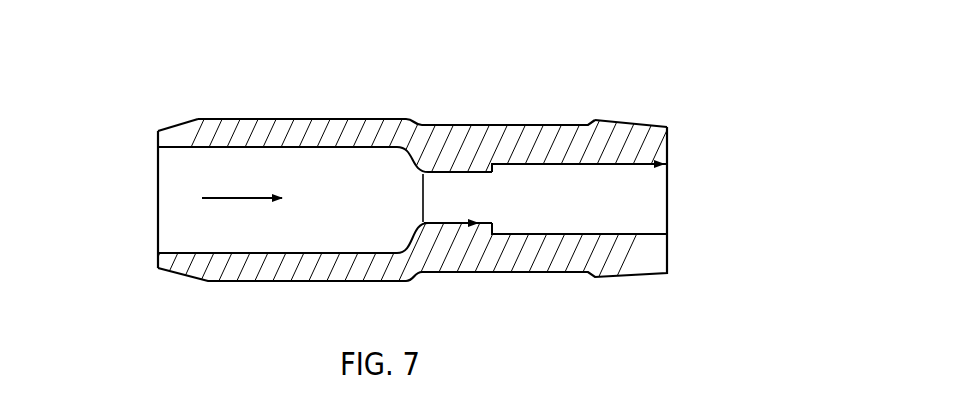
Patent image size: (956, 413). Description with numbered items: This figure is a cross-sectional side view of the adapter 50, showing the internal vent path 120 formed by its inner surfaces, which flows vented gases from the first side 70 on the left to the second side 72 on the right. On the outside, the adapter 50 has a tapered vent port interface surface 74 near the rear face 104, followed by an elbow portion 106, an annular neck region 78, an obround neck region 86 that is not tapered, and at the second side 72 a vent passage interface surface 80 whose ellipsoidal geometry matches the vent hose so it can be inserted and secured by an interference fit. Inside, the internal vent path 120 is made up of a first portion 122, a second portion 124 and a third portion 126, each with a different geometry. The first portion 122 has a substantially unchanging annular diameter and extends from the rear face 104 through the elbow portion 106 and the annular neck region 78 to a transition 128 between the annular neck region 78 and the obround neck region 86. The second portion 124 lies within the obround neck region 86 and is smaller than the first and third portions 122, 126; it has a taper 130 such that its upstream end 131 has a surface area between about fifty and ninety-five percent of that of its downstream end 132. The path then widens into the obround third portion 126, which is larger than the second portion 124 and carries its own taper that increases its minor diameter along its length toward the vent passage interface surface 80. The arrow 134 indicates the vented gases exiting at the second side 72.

The adapter 50 is at (619, 47).
The first side 70 is at (320, 184).
The second side 72 is at (574, 176).
The vent port interface surface 74 is at (198, 120).
The annular neck region 78 is at (326, 119).
The vent passage interface surface 80 is at (650, 123).
The obround neck region 86 is at (470, 152).
The rear face 104 is at (157, 260).
The elbow portion 106 is at (208, 119).
The internal vent path 120 is at (258, 196).
The first portion 122 is at (215, 238).
The second portion 124 is at (463, 185).
The third portion 126 is at (572, 223).
The transition 128 is at (409, 273).
The taper 130 is at (464, 226).
The upstream end 131 is at (423, 200).
The downstream end 132 is at (493, 197).
The outlet flow 134 is at (620, 165).